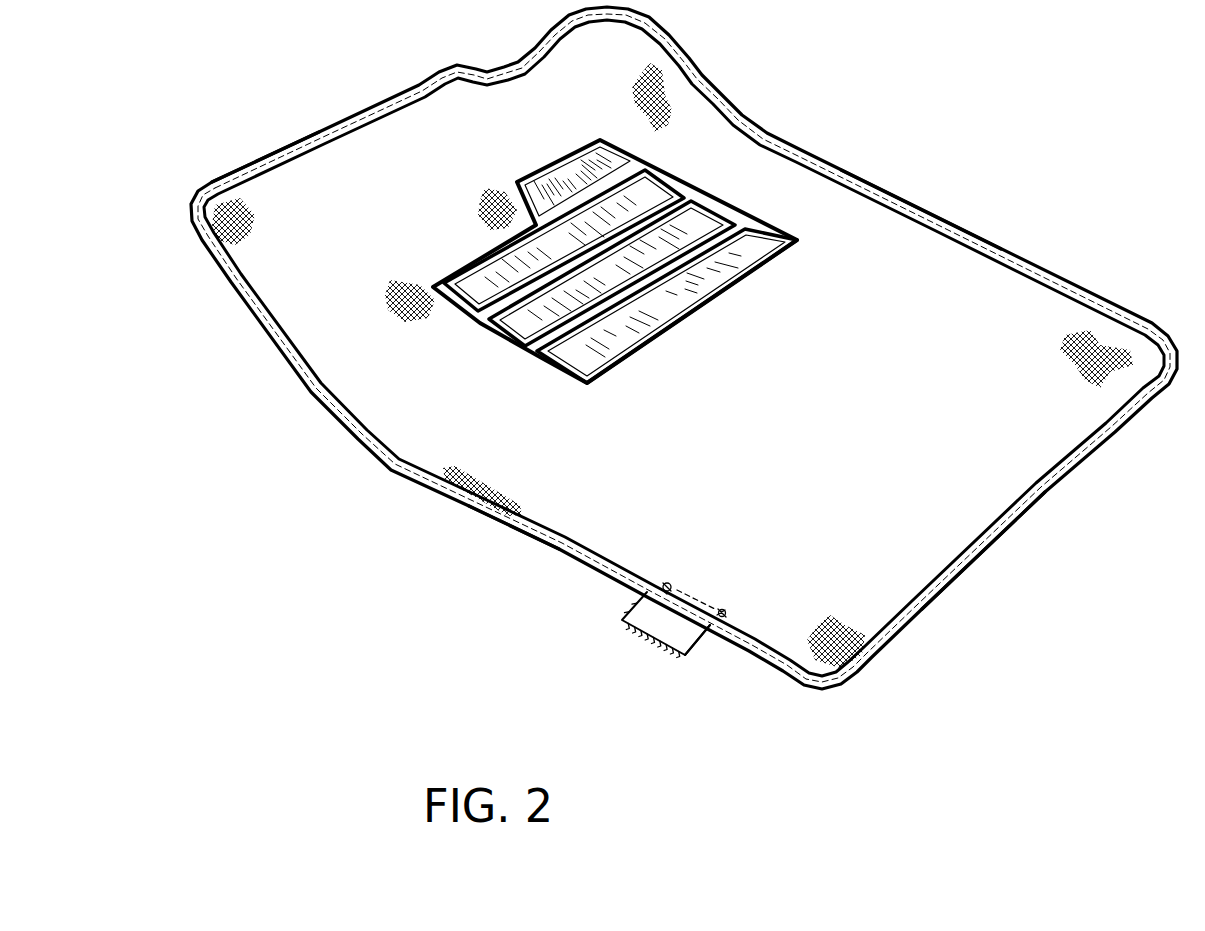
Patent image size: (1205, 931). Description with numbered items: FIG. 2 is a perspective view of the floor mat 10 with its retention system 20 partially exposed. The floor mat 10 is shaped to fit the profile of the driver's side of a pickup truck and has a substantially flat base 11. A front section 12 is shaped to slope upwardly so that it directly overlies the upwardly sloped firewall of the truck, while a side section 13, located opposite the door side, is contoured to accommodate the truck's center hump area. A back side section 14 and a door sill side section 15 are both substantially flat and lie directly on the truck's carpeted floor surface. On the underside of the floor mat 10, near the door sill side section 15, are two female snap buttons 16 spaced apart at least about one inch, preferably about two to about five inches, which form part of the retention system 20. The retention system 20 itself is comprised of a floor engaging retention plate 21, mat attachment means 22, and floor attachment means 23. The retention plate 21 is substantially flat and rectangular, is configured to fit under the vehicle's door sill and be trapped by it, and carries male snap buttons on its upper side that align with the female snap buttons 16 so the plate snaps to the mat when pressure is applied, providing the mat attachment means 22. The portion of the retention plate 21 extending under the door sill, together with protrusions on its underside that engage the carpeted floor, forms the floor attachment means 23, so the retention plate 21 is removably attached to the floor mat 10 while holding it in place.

The floor mat 10 is at (684, 348).
The base 11 is at (831, 389).
The front section 12 is at (262, 192).
The side section 13 is at (922, 236).
The back side section 14 is at (1022, 490).
The door sill side section 15 is at (548, 528).
The female snap buttons 16 is at (660, 575).
The retention system 20 is at (671, 694).
The retention plate 21 is at (708, 636).
The mat attachment means 22 is at (673, 588).
The floor attachment means 23 is at (642, 640).